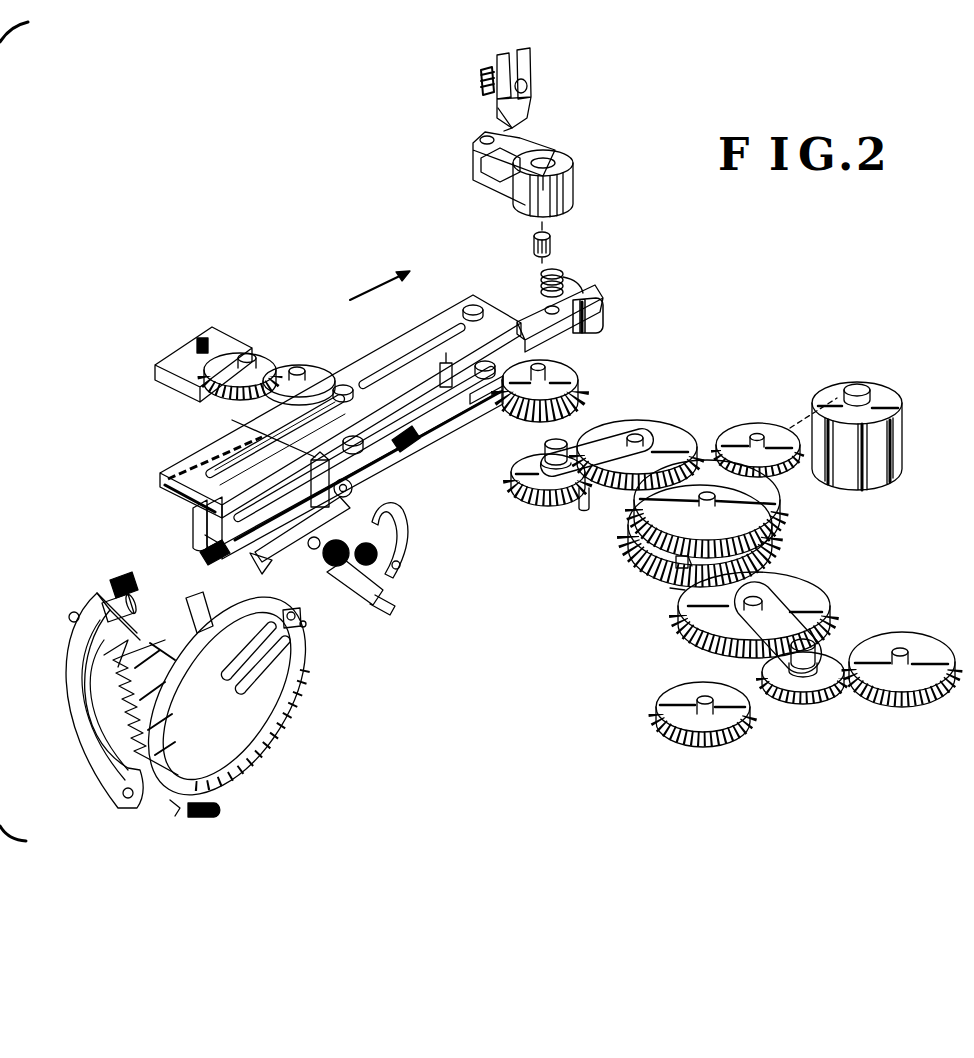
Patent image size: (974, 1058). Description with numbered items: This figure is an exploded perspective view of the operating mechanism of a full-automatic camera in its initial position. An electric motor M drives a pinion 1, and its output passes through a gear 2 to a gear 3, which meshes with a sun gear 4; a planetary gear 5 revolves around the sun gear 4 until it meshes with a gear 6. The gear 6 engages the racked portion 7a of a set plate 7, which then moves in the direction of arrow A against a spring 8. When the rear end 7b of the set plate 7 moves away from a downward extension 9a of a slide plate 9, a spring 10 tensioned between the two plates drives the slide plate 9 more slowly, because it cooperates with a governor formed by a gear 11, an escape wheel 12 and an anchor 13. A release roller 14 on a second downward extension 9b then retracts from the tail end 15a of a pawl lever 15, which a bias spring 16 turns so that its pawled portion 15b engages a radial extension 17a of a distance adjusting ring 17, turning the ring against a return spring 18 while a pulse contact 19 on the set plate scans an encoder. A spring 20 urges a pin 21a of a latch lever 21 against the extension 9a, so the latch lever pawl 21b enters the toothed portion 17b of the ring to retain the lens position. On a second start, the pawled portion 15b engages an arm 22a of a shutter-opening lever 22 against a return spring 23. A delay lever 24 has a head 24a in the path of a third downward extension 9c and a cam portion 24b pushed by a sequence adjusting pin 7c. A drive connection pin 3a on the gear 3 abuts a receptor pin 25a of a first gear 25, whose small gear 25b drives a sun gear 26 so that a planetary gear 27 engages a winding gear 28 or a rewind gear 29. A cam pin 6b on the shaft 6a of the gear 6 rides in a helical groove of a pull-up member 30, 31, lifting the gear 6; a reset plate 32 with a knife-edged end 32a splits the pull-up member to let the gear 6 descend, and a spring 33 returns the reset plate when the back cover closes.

The pinion 1 is at (858, 388).
The electric motor M is at (875, 415).
The gear 2 is at (767, 433).
The gear 3 is at (722, 513).
The drive connection pin 3a is at (690, 560).
The sun gear 4 is at (668, 430).
The planetary gear 5 is at (545, 500).
The gear 6 is at (548, 372).
The shaft 6a is at (534, 248).
The cam pin 6b is at (551, 242).
The set plate 7 is at (359, 445).
The racked portion 7a is at (482, 437).
The rear end 7b is at (205, 530).
The sequence adjusting pin 7c is at (507, 365).
The spring 8 is at (205, 550).
The slide plate 9 is at (337, 413).
The downward extension 9a is at (193, 514).
The downward extension 9b is at (261, 430).
The downward extension 9c is at (445, 352).
The spring 10 is at (413, 452).
The gear 11 is at (290, 368).
The escape wheel 12 is at (250, 356).
The anchor 13 is at (208, 340).
The release roller 14 is at (315, 472).
The pawl lever 15 is at (315, 534).
The tail end 15a is at (353, 486).
The pawled portion 15b is at (262, 562).
The bias spring 16 is at (332, 566).
The distance adjusting ring 17 is at (181, 692).
The radial extension 17a is at (193, 596).
The toothed portion 17b is at (110, 705).
The return spring 18 is at (218, 813).
The pulse contact 19 is at (300, 626).
The spring 20 is at (121, 578).
The latch lever 21 is at (81, 700).
The pin 21a is at (80, 640).
The pawl 21b is at (125, 646).
The shutter-opening lever 22 is at (374, 584).
The arm 22a is at (406, 521).
The return spring 23 is at (372, 577).
The delay lever 24 is at (571, 302).
The head 24a is at (517, 320).
The cam portion 24b is at (605, 313).
The first gear 25 is at (690, 562).
The receptor pin 25a is at (676, 555).
The small gear 25b is at (674, 590).
The sun gear 26 is at (798, 592).
The planetary gear 27 is at (826, 690).
The gear 28 is at (906, 640).
The rewind gear 29 is at (733, 722).
The pull-up member 30 is at (546, 180).
The pull-up member 31 is at (574, 172).
The reset plate 32 is at (510, 89).
The knife-edged end 32a is at (498, 118).
The spring 33 is at (480, 78).
The arrow A is at (363, 290).